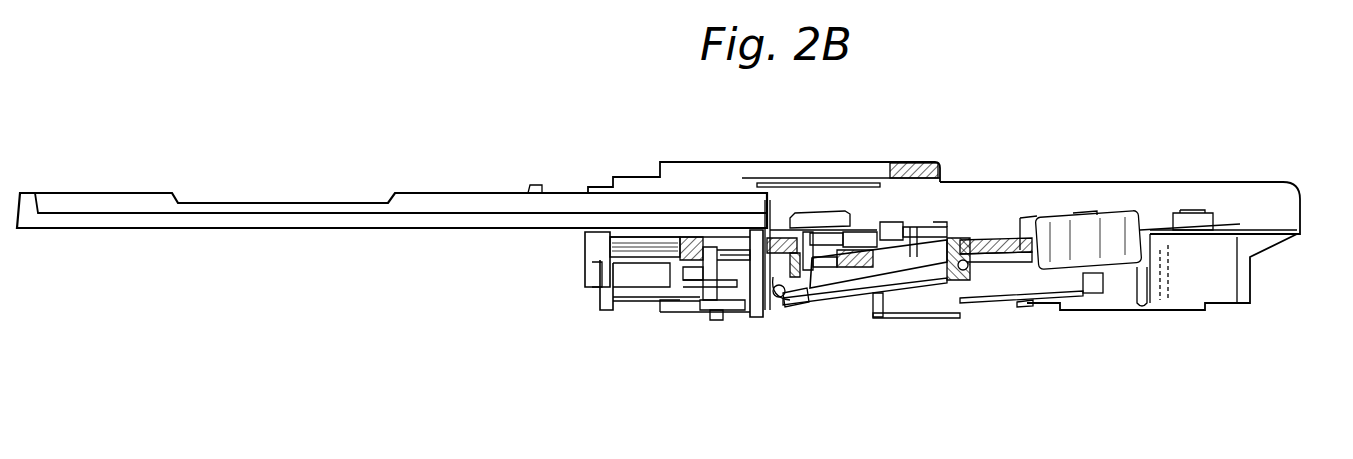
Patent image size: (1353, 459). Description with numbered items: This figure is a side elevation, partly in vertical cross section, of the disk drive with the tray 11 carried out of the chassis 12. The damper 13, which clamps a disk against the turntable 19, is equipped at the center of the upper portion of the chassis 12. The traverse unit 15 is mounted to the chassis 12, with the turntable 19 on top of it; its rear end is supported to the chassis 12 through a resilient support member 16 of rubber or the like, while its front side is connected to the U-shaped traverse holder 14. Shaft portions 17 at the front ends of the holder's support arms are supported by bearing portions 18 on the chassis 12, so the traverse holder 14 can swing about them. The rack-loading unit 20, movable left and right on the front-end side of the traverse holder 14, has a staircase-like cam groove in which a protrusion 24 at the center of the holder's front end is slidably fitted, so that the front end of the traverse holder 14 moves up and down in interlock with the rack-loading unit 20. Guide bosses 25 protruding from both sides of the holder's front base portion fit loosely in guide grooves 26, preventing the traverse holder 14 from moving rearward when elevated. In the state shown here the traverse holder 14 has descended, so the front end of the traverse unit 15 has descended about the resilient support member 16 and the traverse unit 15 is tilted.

The tray 11 is at (293, 221).
The chassis 12 is at (1283, 213).
The damper 13 is at (857, 162).
The traverse holder 14 is at (852, 278).
The traverse unit 15 is at (900, 297).
The resilient support member 16 is at (1205, 213).
The shaft portions 17 is at (980, 303).
The bearing portions 18 is at (945, 287).
The turntable 19 is at (803, 208).
The rack-loading unit 20 is at (733, 315).
The protrusion 24 is at (752, 318).
The guide bosses 25 is at (787, 313).
The guide grooves 26 is at (802, 303).